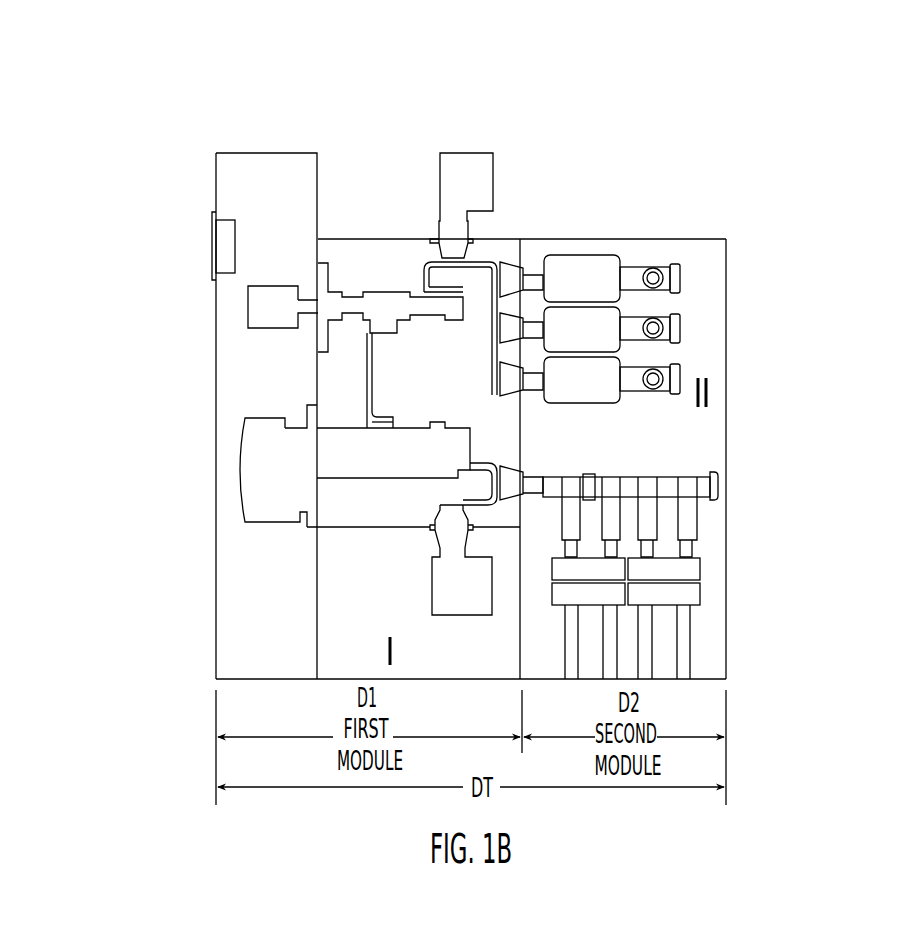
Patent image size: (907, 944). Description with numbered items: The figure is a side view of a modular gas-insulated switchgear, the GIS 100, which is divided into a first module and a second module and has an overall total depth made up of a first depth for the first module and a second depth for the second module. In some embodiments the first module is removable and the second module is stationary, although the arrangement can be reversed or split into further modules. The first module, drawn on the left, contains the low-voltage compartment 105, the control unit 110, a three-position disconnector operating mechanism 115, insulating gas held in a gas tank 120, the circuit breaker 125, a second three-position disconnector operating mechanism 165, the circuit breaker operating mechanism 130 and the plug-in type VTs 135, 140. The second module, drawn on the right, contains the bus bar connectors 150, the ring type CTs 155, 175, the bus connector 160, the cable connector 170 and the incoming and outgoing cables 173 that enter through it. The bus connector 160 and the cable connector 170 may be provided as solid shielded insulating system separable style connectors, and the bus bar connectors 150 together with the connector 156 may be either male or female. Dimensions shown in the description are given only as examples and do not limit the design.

The modular GIS 100 is at (297, 83).
The low-voltage compartment 105 is at (212, 160).
The control unit 110 is at (211, 247).
The three-position disconnector operating mechanism 115 is at (253, 297).
The gas tank 120 is at (336, 373).
The circuit breaker 125 is at (354, 455).
The circuit breaker operating mechanism 130 is at (263, 496).
The plug-in type VT 135 is at (445, 598).
The plug-in type VT 140 is at (496, 148).
The bus bar connectors 150 is at (530, 272).
The ring type CT 155 is at (600, 248).
The connector 156 is at (532, 483).
The bus connector 160 is at (680, 326).
The three-position disconnector operating mechanism 165 is at (390, 298).
The cable connector 170 is at (702, 515).
The incoming and outgoing cables 173 is at (695, 653).
The ring type CT 175 is at (707, 595).